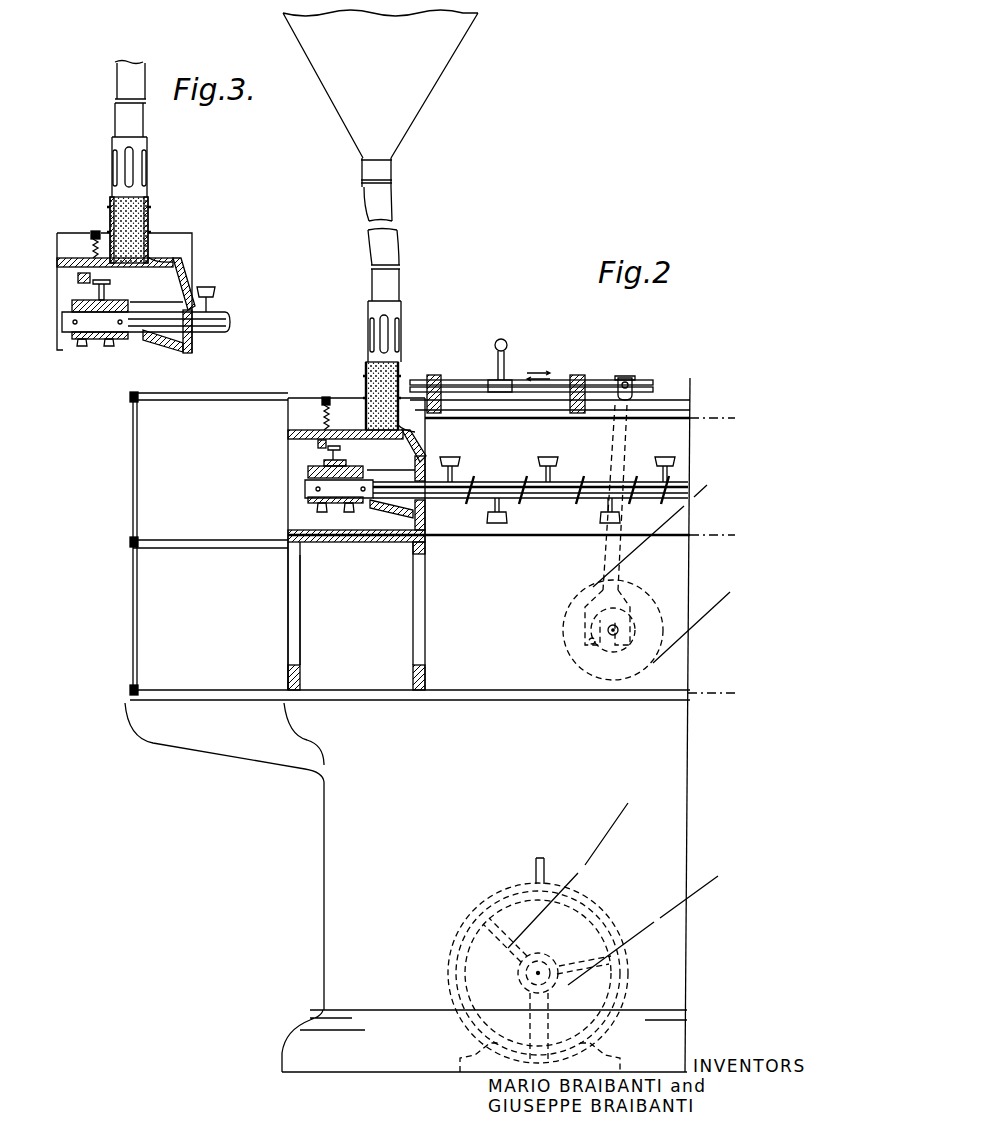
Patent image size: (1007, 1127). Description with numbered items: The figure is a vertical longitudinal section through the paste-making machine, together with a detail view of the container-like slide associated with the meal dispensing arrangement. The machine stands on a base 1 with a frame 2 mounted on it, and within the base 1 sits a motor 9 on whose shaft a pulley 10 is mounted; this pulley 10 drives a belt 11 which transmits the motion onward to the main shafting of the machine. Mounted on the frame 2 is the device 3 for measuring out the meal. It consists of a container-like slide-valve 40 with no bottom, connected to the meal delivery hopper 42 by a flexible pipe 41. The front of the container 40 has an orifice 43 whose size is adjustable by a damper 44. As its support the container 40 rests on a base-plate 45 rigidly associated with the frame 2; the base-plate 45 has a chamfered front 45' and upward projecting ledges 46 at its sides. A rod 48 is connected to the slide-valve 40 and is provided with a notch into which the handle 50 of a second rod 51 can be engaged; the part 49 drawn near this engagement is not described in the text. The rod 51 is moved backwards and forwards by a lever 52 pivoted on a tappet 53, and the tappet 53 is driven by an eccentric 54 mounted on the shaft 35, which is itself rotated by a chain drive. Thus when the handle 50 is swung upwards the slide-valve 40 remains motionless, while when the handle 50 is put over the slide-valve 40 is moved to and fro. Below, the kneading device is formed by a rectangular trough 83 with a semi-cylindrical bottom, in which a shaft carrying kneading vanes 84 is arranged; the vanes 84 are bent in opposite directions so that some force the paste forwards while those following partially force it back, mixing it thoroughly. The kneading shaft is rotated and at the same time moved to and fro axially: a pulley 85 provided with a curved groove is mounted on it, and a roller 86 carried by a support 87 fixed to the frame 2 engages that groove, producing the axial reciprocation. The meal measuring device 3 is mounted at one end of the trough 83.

In FIG. 2, the base 1 is at (320, 880).
In FIG. 2, the frame 2 is at (302, 592).
In FIG. 2, the device for measuring-out the meal 3 is at (392, 287).
In FIG. 2, the motor 9 is at (493, 900).
In FIG. 2, the pulley 10 is at (643, 941).
In FIG. 2, the belt 11 is at (630, 808).
In FIG. 2, the shaft 35 is at (620, 626).
In FIG. 3, the container-like slide-valve 40 is at (110, 197).
In FIG. 2, the container-like slide-valve 40 is at (365, 378).
In FIG. 3, the flexible pipe 41 is at (122, 62).
In FIG. 2, the flexible pipe 41 is at (386, 208).
In FIG. 2, the meal delivery hopper 42 is at (447, 36).
In FIG. 3, the orifice 43 is at (160, 257).
In FIG. 2, the orifice 43 is at (405, 433).
In FIG. 3, the damper 44 is at (150, 207).
In FIG. 3, the base-plate 45 is at (100, 273).
In FIG. 2, the base-plate 45 is at (327, 424).
In FIG. 3, the chamfered front 45' is at (203, 305).
In FIG. 2, the chamfered front 45' is at (434, 480).
In FIG. 3, the upward projecting ledges 46 is at (60, 238).
In FIG. 2, the upward projecting ledges 46 is at (305, 397).
In FIG. 2, the rod 48 is at (457, 375).
In FIG. 2, the slide block 49 is at (505, 394).
In FIG. 2, the handle 50 is at (508, 346).
In FIG. 2, the rod 51 is at (610, 380).
In FIG. 2, the lever 52 is at (632, 405).
In FIG. 2, the tappet 53 is at (612, 483).
In FIG. 2, the eccentric 54 is at (590, 642).
In FIG. 2, the trough 83 is at (552, 532).
In FIG. 2, the kneading vanes 84 is at (548, 457).
In FIG. 2, the pulley 85 is at (323, 507).
In FIG. 2, the roller 86 is at (320, 470).
In FIG. 2, the support 87 is at (320, 455).